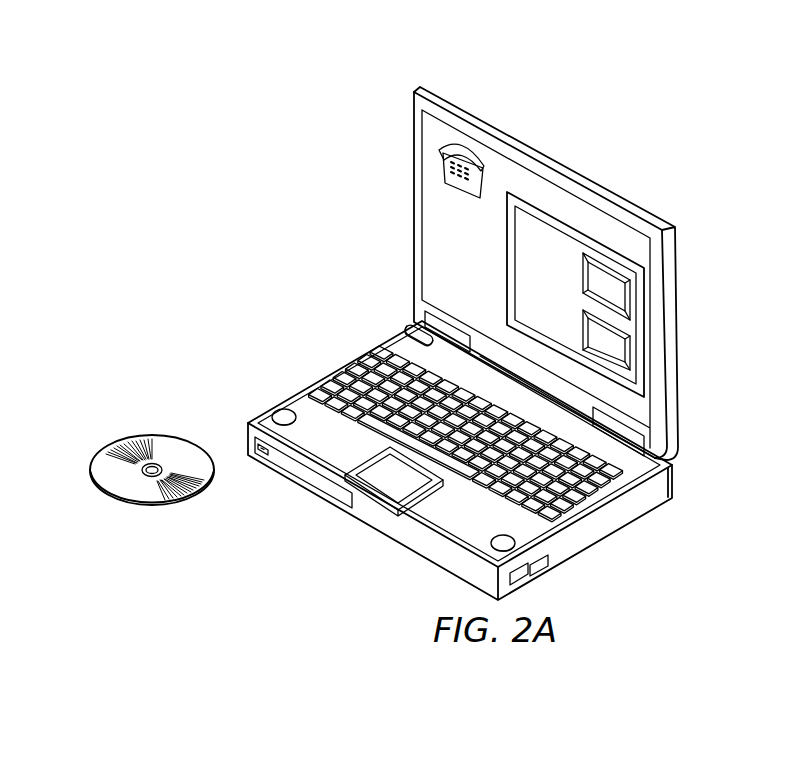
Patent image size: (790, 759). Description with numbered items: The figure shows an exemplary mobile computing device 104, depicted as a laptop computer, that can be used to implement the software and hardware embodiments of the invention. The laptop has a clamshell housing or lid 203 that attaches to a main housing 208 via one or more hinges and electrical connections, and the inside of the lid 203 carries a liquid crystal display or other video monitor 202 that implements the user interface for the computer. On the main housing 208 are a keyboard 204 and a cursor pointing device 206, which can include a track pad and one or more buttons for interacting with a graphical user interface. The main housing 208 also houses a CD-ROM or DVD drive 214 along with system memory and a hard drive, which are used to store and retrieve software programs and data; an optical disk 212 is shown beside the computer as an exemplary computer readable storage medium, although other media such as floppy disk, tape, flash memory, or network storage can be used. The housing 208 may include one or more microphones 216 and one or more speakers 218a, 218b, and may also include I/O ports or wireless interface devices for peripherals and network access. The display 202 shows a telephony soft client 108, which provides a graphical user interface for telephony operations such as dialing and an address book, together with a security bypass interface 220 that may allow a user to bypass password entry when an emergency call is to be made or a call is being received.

The mobile computing device 104 is at (326, 160).
The display 202 is at (572, 218).
The clamshell housing 203 is at (637, 214).
The telephony soft client 108 is at (459, 188).
The security bypass interface 220 is at (520, 306).
The microphone 216 is at (407, 330).
The keyboard 204 is at (346, 383).
The speaker 218a is at (283, 413).
The speaker 218b is at (491, 541).
The optical disk 212 is at (104, 462).
The cursor pointing device 206 is at (380, 467).
The CD-ROM drive 214 is at (297, 468).
The main housing 208 is at (421, 545).